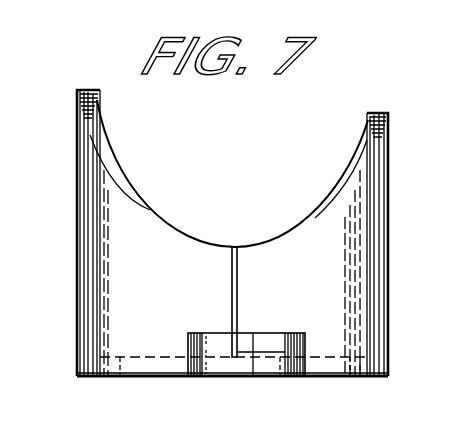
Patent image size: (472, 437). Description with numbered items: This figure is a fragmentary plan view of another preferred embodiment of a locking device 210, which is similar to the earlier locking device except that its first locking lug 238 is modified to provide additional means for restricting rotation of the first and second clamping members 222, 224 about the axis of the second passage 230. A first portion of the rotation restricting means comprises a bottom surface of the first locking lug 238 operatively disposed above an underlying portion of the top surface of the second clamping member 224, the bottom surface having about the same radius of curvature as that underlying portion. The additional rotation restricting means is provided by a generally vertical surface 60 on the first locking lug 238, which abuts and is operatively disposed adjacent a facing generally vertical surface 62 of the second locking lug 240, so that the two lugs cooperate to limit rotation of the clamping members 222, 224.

The locking device 210 is at (72, 234).
The first clamping member 222 is at (113, 273).
The second clamping member 224 is at (352, 298).
The generally vertical surface 60 is at (228, 344).
The facing generally vertical surface 62 is at (243, 338).
The second locking lug 240 is at (306, 322).
The first locking lug 238 is at (228, 381).
The second passage 230 is at (326, 379).